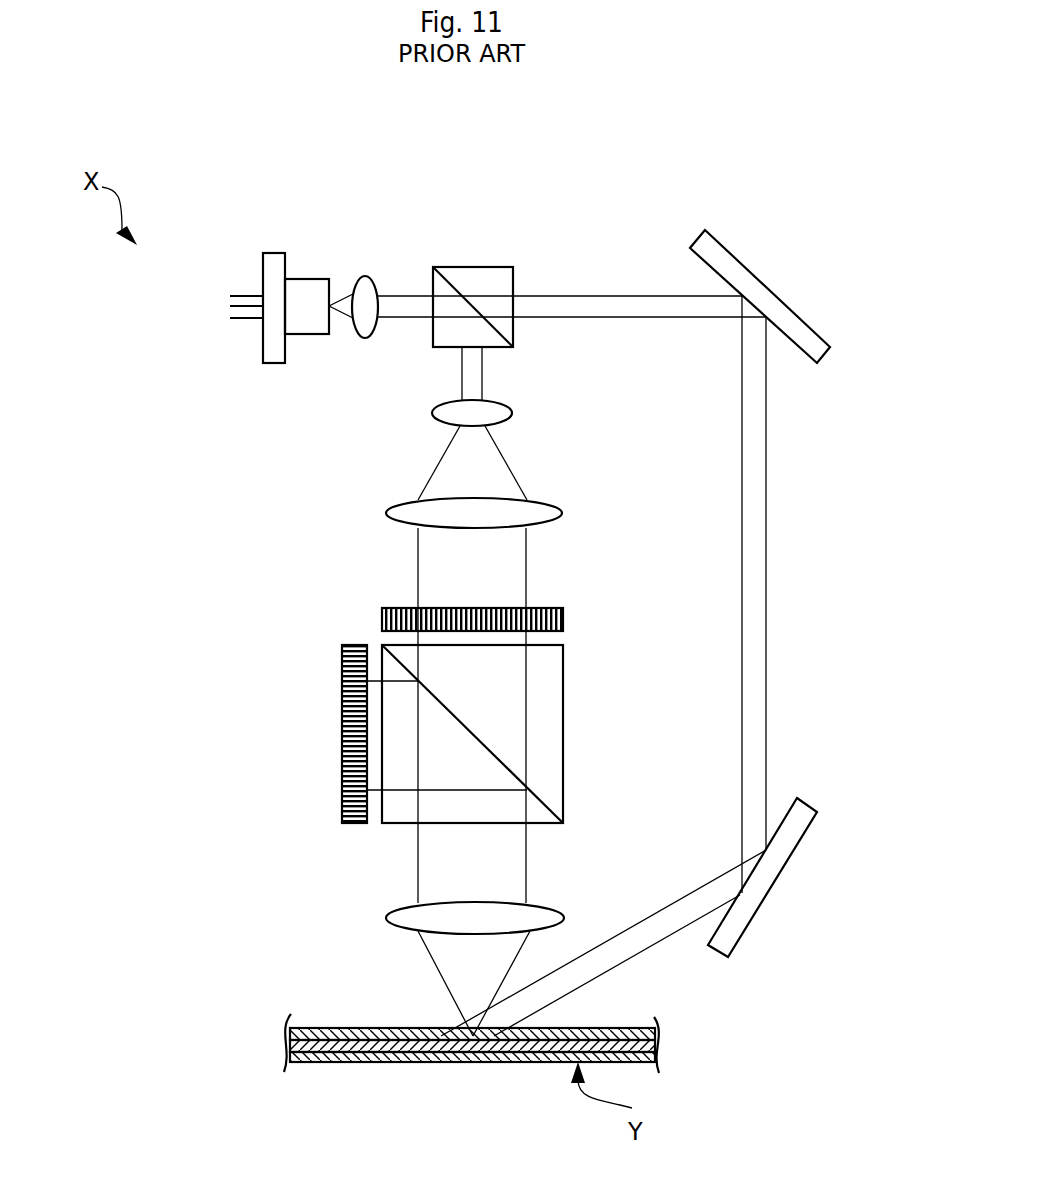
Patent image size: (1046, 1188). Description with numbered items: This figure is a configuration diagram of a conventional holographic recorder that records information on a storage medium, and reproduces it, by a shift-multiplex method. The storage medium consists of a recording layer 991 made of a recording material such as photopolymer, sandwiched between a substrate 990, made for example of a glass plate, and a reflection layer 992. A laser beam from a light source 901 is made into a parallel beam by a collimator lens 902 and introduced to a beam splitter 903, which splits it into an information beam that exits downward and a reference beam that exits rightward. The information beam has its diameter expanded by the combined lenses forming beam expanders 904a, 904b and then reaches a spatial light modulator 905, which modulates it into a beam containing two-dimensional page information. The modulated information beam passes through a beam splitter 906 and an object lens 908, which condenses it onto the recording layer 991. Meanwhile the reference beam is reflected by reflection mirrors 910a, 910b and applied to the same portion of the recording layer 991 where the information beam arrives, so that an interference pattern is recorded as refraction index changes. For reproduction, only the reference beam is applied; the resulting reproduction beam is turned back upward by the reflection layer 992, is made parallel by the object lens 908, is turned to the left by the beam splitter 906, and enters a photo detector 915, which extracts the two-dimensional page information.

The light source 901 is at (274, 252).
The collimator lens 902 is at (364, 276).
The beam splitter 903 is at (472, 267).
The beam expander 904a is at (432, 413).
The beam expander 904b is at (387, 513).
The spatial light modulator 905 is at (563, 619).
The beam splitter 906 is at (563, 724).
The object lens 908 is at (387, 918).
The reflection mirror 910a is at (735, 253).
The reflection mirror 910b is at (810, 830).
The photo detector 915 is at (342, 657).
The substrate 990 is at (655, 1033).
The recording layer 991 is at (655, 1045).
The reflection layer 992 is at (655, 1057).